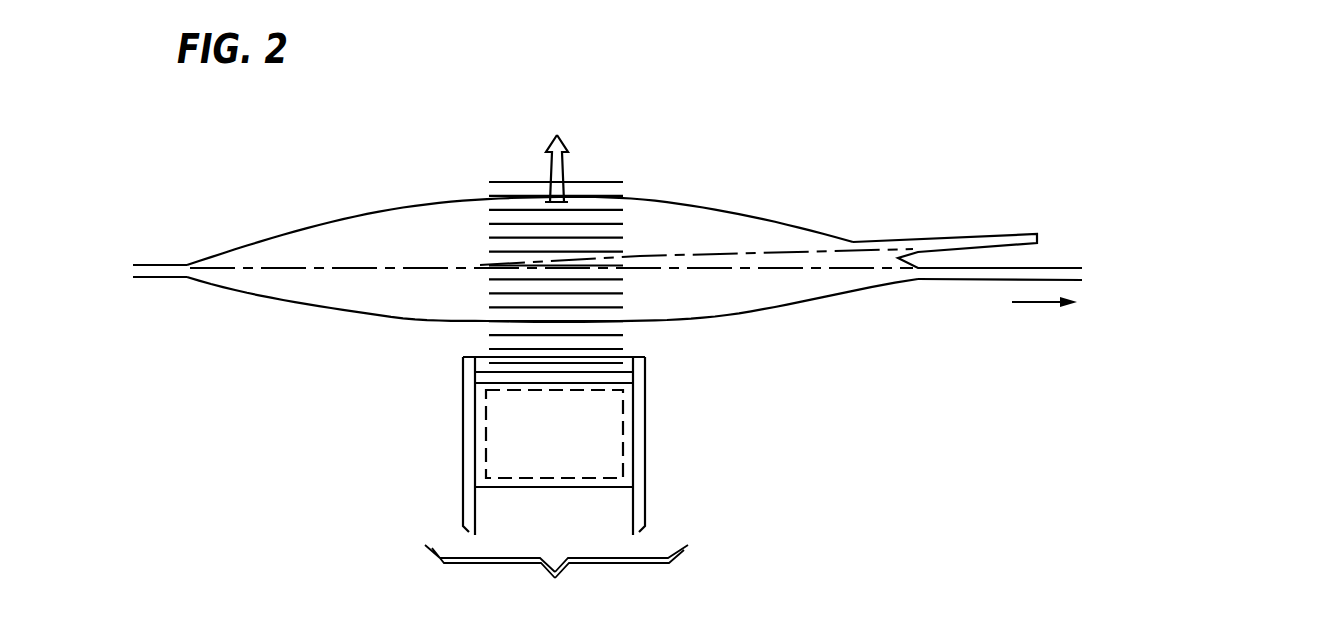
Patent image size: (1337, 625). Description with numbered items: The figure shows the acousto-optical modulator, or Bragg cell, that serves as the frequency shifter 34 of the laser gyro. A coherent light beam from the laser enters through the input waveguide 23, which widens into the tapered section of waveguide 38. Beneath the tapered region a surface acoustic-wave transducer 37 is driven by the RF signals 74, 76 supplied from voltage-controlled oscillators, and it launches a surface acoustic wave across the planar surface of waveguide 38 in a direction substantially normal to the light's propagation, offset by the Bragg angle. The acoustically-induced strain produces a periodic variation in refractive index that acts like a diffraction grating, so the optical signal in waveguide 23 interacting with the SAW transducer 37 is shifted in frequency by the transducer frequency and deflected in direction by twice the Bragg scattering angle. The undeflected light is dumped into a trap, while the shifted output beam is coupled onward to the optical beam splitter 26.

The waveguide 23 is at (153, 265).
The frequency shifter 34 is at (712, 153).
The surface acoustic-wave (SAW) transducer 37 is at (547, 482).
The tapered section of waveguide 38 is at (378, 315).
The optical beam splitter 26 is at (1163, 314).
The RF signal 74 is at (560, 578).
The RF signal 76 is at (621, 561).